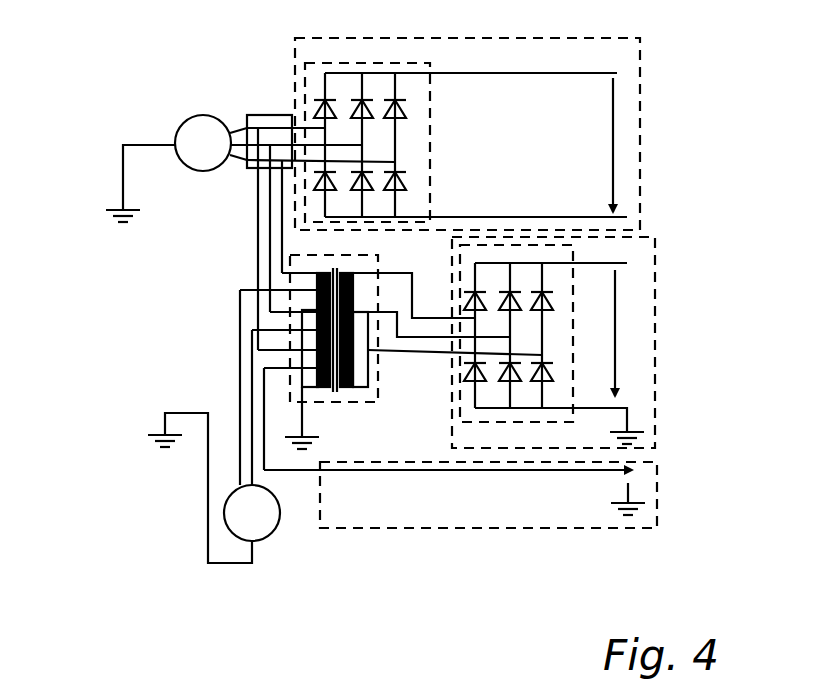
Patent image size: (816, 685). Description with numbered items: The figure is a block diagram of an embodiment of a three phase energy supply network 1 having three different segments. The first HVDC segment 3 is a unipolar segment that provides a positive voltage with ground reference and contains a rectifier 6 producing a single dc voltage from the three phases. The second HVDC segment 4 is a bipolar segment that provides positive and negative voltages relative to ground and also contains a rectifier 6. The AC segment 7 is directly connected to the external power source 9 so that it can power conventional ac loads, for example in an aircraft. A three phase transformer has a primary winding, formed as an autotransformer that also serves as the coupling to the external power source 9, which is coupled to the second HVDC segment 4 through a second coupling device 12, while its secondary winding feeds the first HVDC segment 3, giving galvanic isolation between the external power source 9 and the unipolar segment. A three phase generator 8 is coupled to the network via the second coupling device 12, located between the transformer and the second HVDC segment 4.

The energy supply network 1 is at (110, 358).
The first HVDC segment 3 is at (655, 328).
The second HVDC segment 4 is at (640, 115).
The rectifier 6 is at (305, 82).
The AC segment 7 is at (657, 490).
The three phase generator 8 is at (200, 172).
The external power source 9 is at (278, 538).
The second coupling device 12 is at (252, 115).